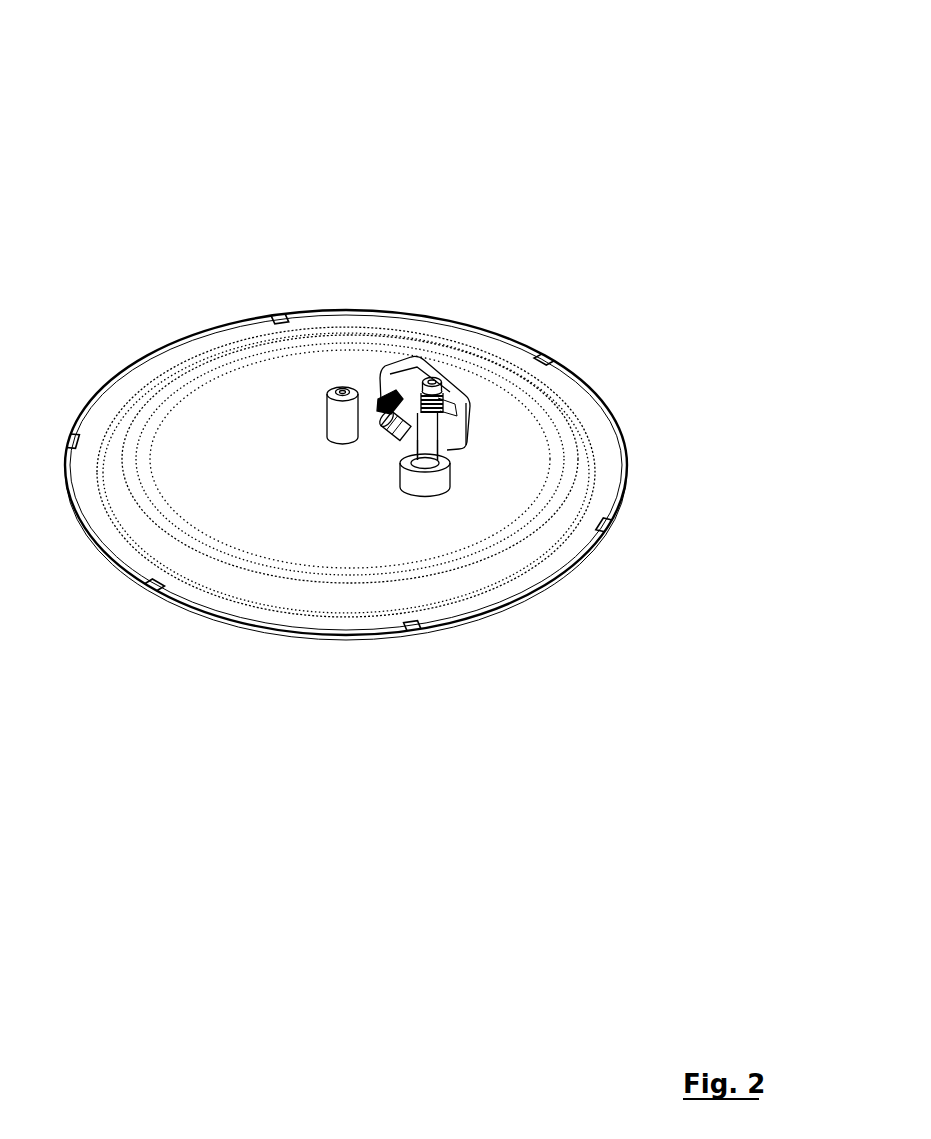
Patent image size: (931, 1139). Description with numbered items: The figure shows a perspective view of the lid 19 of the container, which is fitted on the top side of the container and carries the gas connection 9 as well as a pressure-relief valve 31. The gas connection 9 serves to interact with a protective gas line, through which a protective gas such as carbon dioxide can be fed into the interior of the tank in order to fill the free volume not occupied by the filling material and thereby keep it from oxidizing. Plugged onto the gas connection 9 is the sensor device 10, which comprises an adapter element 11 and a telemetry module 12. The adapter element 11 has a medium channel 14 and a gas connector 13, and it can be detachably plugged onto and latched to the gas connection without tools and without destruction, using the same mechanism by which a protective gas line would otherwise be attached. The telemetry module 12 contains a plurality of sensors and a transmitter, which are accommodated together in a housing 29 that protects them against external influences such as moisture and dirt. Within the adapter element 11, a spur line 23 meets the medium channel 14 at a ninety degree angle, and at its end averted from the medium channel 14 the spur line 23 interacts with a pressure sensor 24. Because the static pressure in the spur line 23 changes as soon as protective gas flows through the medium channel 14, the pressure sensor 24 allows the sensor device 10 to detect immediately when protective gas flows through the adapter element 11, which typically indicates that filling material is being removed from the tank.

The lid 19 is at (168, 285).
The pressure-relief valve 31 is at (330, 386).
The housing 29 is at (401, 360).
The gas connector 13 is at (433, 377).
The sensor device 10 is at (530, 289).
The telemetry module 12 is at (482, 412).
The spur line 23 is at (315, 441).
The pressure sensor 24 is at (392, 418).
The gas connection 9 is at (426, 447).
The medium channel 14 is at (433, 445).
The adapter element 11 is at (404, 470).